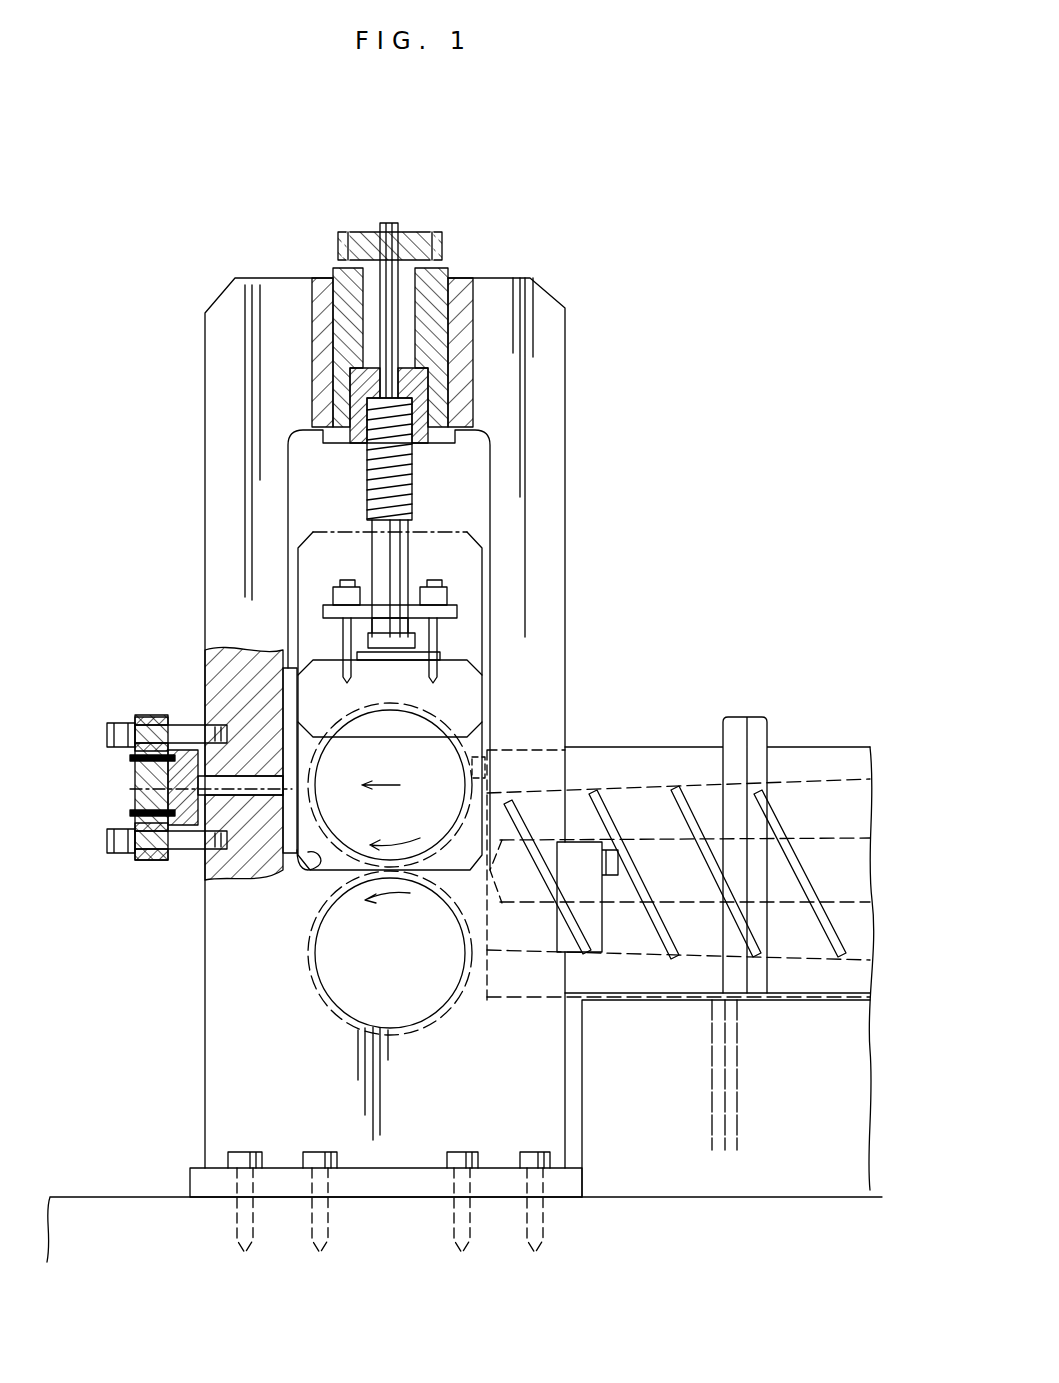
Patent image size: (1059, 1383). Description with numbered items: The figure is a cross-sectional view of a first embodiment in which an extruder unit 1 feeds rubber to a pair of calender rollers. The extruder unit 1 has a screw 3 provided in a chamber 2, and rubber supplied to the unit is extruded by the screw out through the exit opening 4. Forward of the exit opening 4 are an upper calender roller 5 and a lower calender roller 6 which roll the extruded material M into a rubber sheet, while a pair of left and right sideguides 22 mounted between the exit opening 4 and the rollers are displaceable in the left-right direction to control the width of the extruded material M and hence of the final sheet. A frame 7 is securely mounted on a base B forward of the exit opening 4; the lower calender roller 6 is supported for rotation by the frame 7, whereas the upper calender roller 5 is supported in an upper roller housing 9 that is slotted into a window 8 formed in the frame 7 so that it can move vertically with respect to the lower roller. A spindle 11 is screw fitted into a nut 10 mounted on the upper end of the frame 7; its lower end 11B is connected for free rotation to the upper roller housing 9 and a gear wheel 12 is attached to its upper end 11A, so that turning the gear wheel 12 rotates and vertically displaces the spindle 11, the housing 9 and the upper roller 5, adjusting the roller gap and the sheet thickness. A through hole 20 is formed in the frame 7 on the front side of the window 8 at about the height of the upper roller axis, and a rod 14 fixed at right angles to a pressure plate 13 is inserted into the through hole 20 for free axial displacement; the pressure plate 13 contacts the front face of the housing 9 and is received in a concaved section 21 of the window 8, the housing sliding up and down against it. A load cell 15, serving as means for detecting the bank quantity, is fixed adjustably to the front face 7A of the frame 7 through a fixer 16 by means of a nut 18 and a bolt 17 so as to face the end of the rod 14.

The extruder unit 1 is at (692, 736).
The chamber 2 is at (642, 782).
The screw 3 is at (602, 797).
The exit opening 4 is at (510, 800).
The upper calender roller 5 is at (455, 716).
The lower calender roller 6 is at (405, 1037).
The frame 7 is at (205, 368).
The front face of frame 7A is at (205, 540).
The window 8 is at (292, 452).
The upper roller housing 9 is at (455, 680).
The nut 10 is at (428, 380).
The spindle 11 is at (412, 484).
The upper end of spindle 11A is at (389, 223).
The lower end of spindle 11B is at (343, 652).
The gear wheel 12 is at (415, 236).
The pressure plate 13 is at (292, 812).
The rod 14 is at (248, 785).
The load cell 15 is at (182, 750).
The fixer 16 is at (135, 782).
The bolt 17 is at (148, 717).
The nut 18 is at (110, 727).
The through hole 20 is at (258, 796).
The concaved section 21 is at (302, 858).
The sideguide 22 is at (466, 990).
The extruded material M is at (490, 782).
The base B is at (110, 1212).